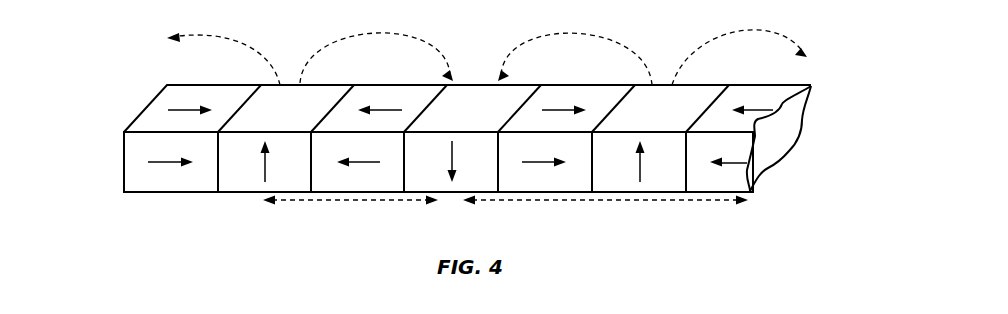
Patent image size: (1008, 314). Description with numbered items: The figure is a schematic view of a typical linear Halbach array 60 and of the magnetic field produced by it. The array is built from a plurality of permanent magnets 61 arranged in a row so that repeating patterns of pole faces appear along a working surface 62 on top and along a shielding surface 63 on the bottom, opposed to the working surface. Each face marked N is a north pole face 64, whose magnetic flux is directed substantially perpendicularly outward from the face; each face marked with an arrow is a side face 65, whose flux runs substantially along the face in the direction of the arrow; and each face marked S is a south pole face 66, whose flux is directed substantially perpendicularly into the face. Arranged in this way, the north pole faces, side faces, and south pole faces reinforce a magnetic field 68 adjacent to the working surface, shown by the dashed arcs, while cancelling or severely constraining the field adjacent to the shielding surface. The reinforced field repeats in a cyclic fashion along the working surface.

The linear Halbach array 60 is at (120, 114).
The permanent magnets 61 is at (232, 201).
The working surface 62 is at (228, 95).
The shielding surface 63 is at (298, 192).
The north pole face 64 is at (330, 88).
The side face 65 is at (423, 183).
The south pole face 66 is at (472, 90).
The magnetic field 68 is at (543, 40).